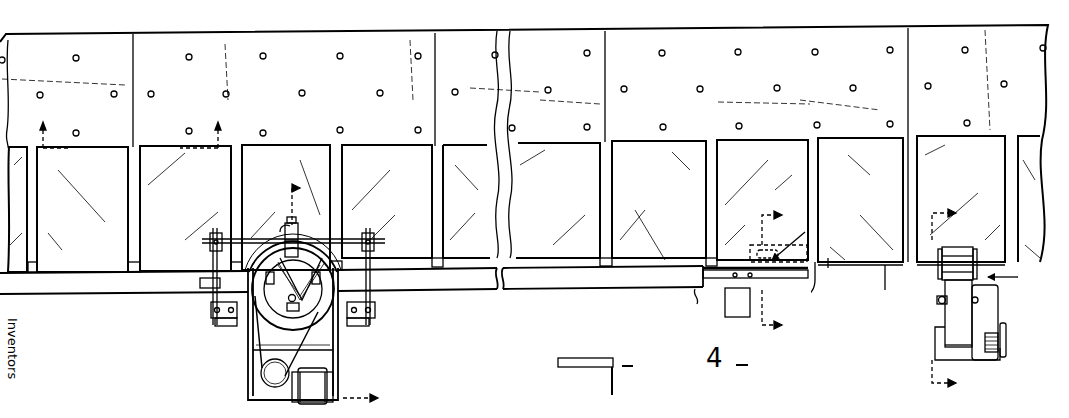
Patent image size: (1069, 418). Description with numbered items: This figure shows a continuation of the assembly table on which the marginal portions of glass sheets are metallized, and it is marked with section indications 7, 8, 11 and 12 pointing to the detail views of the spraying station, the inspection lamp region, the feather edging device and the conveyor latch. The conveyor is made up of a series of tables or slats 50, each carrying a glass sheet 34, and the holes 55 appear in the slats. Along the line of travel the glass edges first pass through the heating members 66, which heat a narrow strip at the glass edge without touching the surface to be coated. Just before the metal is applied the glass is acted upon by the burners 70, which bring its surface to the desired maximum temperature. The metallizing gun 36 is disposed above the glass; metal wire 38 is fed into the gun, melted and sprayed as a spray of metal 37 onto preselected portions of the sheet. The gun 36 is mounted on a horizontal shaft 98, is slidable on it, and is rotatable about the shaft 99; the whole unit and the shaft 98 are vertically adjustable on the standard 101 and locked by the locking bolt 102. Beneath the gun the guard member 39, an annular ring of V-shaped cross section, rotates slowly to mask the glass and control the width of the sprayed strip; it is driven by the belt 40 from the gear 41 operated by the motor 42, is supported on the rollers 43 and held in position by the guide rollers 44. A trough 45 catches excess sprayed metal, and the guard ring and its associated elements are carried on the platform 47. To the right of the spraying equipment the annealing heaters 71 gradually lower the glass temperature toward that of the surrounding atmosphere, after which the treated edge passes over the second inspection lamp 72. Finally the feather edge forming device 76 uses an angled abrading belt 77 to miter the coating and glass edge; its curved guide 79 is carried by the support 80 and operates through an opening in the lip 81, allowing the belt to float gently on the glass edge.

The section line 7- 7 is at (335, 285).
The section line 8- 8 is at (768, 274).
The section line 11- 11 is at (936, 294).
The section line 12- 12 is at (130, 132).
The glass sheet 34 is at (452, 148).
The metallizing gun 36 is at (284, 232).
The spray of metal 37 is at (262, 251).
The metal wire 38 is at (300, 226).
The guard member 39 is at (222, 283).
The belt 40 is at (256, 343).
The gear 41 is at (268, 374).
The motor 42 is at (320, 386).
The rollers 43 is at (293, 289).
The guide rollers 44 is at (283, 314).
The trough 45 is at (298, 272).
The platform 47 is at (320, 340).
The tables 50 is at (618, 42).
The holes 55 is at (887, 50).
The heating members 66 is at (92, 294).
The burners 70 is at (345, 283).
The heaters 71 is at (520, 284).
The second inspection lamp 72 is at (802, 248).
The feather edge forming device 76 is at (1013, 279).
The abrading belt 77 is at (960, 256).
The curved guide 79 is at (938, 300).
The support 80 is at (993, 309).
The lip 81 is at (940, 304).
The horizontal shaft 98 is at (374, 252).
The shaft 99 is at (368, 233).
The standard 101 is at (354, 322).
The locking bolt 102 is at (238, 322).